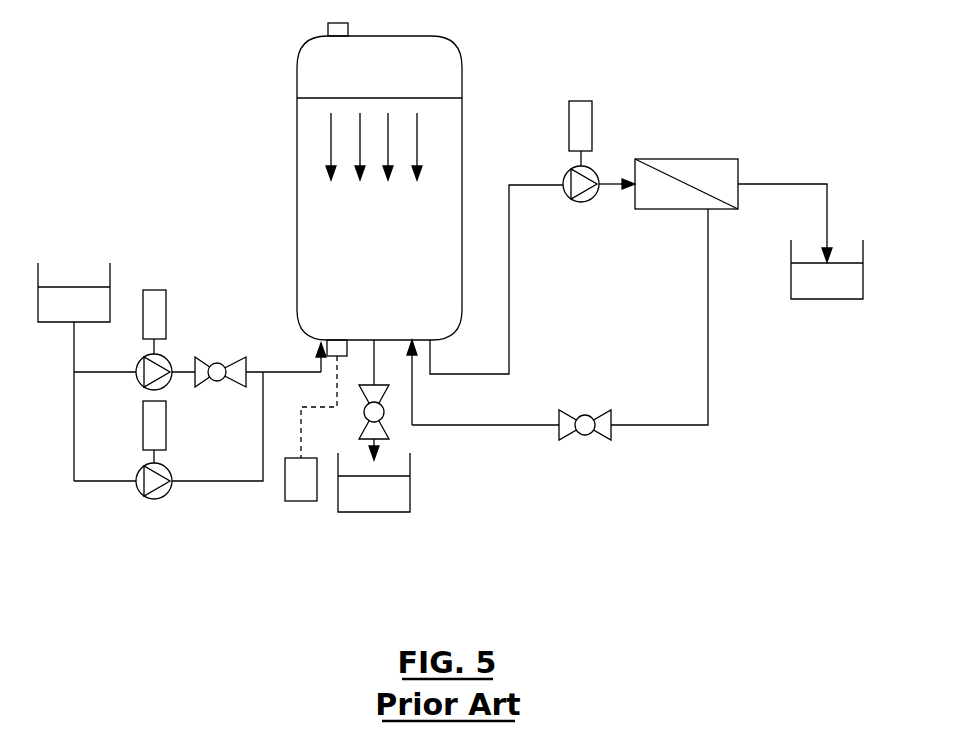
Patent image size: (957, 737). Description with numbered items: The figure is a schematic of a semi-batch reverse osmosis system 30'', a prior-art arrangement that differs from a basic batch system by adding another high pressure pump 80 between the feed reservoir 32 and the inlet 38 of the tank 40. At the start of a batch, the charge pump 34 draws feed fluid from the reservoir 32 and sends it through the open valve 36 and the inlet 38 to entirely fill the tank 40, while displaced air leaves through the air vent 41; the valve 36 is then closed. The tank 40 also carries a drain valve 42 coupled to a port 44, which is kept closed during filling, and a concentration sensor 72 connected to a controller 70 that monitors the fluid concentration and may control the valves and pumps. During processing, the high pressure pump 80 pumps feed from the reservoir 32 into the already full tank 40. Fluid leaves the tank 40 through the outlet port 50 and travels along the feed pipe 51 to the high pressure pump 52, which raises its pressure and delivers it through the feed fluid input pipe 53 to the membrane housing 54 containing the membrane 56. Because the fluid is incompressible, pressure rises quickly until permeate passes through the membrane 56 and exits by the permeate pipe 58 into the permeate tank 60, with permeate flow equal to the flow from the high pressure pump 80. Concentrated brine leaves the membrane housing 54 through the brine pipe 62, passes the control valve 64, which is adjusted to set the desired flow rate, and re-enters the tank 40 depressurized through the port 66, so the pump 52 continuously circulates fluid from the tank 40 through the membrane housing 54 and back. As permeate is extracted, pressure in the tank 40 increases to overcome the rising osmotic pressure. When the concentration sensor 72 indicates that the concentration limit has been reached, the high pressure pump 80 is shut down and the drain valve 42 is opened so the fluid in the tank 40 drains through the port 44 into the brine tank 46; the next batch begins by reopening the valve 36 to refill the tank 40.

The semi-batch reverse osmosis system 30'' is at (98, 80).
The feed reservoir 32 is at (38, 303).
The charge pump 34 is at (137, 381).
The valve 36 is at (214, 352).
The inlet 38 is at (321, 360).
The tank 40 is at (297, 200).
The air vent 41 is at (336, 23).
The drain valve 42 is at (381, 417).
The port 44 is at (375, 385).
The brine tank 46 is at (410, 490).
The outlet port 50 is at (432, 357).
The feed pipe 51 is at (509, 270).
The high pressure pump 52 is at (565, 173).
The feed fluid input pipe 53 is at (608, 180).
The membrane housing 54 is at (722, 159).
The membrane 56 is at (680, 178).
The permeate pipe 58 is at (805, 183).
The permeate tank 60 is at (845, 300).
The brine pipe 62 is at (708, 242).
The valve 64 is at (585, 438).
The port 66 is at (412, 400).
The controller 70 is at (303, 502).
The concentration sensor 72 is at (335, 343).
The high pressure pump 80 is at (137, 490).